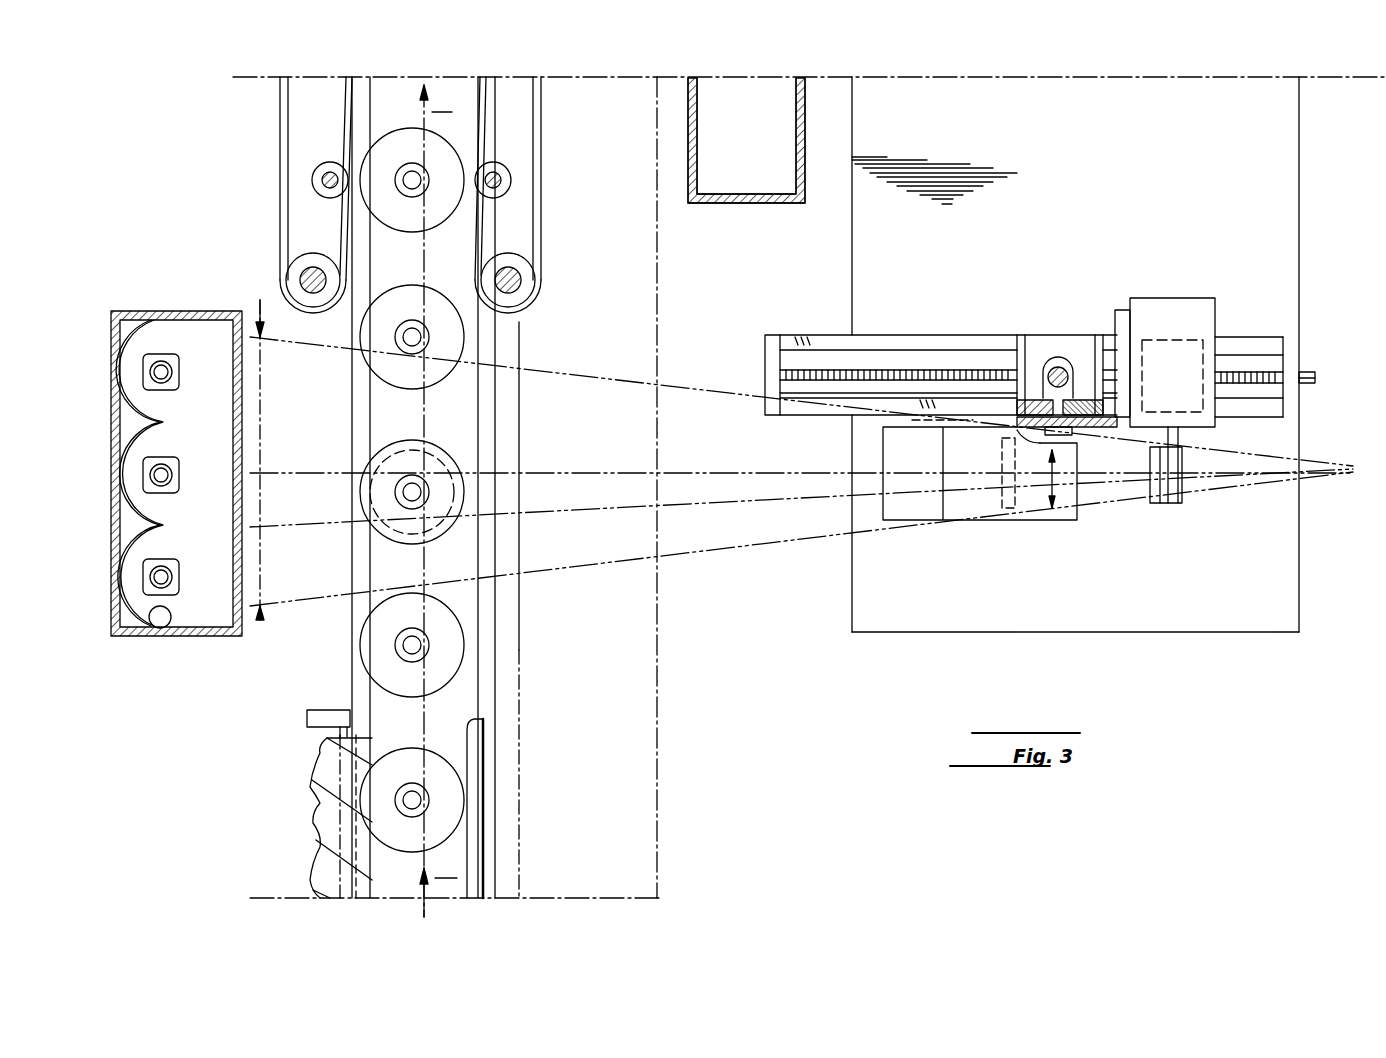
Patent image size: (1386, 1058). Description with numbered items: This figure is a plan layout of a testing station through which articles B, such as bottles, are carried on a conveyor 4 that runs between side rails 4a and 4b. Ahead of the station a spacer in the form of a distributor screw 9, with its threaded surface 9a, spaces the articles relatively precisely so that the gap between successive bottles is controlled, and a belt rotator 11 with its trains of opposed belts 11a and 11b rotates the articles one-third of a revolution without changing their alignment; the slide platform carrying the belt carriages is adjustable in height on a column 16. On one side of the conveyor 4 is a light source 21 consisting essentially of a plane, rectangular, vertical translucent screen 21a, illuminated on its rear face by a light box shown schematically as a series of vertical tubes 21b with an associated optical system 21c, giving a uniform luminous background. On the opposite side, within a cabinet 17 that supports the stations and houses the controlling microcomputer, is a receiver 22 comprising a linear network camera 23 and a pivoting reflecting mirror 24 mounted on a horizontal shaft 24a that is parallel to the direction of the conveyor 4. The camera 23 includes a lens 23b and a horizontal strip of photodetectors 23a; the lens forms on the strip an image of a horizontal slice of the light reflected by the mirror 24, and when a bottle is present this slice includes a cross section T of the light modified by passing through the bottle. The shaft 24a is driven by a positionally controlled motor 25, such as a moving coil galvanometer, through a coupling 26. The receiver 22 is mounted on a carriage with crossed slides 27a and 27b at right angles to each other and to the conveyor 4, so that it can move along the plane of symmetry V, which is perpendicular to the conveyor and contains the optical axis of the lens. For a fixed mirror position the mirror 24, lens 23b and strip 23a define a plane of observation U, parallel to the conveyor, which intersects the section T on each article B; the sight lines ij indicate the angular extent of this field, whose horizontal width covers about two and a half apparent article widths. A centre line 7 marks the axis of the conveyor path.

The conveyor 4 is at (488, 756).
The conveyor rail 4a is at (468, 686).
The conveyor rail 4b is at (370, 686).
The axis line 7 is at (662, 830).
The distributor screw 9 is at (292, 838).
The web edge 9a is at (320, 807).
The belt rotator 11 is at (257, 113).
The opposed belt 11a is at (540, 110).
The opposed belt 11b is at (278, 168).
The column 16 is at (747, 205).
The cabinet 17 is at (1189, 620).
The light source 21 is at (215, 465).
The screen 21a is at (243, 391).
The vertical tubes 21b is at (166, 383).
The optical system 21c is at (168, 637).
The receiver 22 is at (1062, 372).
The linear network camera 23 is at (955, 512).
The strip of photodetectors 23a is at (1007, 512).
The lens 23b is at (1058, 505).
The pivoting reflecting mirror 24 is at (1172, 506).
The shaft 24a is at (1180, 445).
The motor 25 is at (1183, 340).
The coupling 26 is at (1010, 423).
The slide 27a is at (912, 370).
The slide 27b is at (1017, 412).
The article B is at (457, 533).
The cross section T is at (427, 450).
The plane of observation U is at (269, 470).
The plane of symmetry V is at (282, 472).
The sight line ij is at (801, 471).